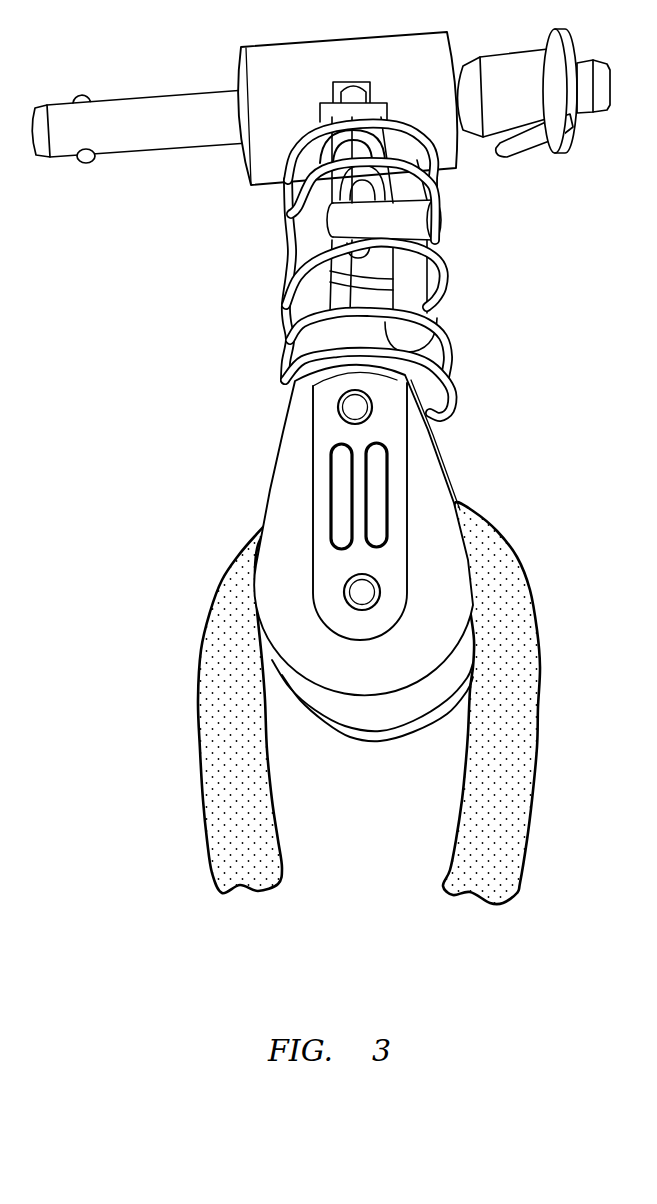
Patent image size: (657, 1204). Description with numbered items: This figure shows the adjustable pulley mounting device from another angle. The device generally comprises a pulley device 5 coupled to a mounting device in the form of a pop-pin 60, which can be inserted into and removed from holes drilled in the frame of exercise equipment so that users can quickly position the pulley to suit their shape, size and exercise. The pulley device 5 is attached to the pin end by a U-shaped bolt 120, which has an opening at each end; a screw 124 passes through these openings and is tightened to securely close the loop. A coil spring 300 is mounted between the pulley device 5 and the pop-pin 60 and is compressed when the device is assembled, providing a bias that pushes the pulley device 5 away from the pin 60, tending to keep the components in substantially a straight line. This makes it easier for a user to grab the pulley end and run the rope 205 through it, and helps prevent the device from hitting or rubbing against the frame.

The pulley device 5 is at (463, 452).
The pop-pin 60 is at (140, 182).
The U-shaped bolt 120 is at (413, 296).
The screw 124 is at (443, 215).
The rope 205 is at (212, 668).
The coil spring 300 is at (281, 371).